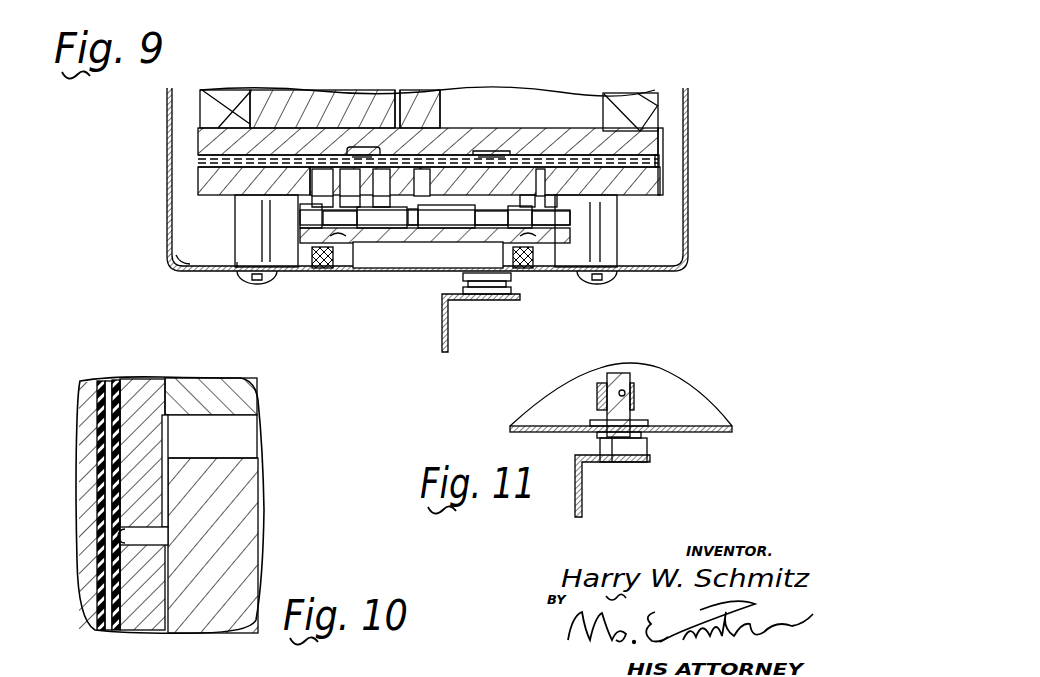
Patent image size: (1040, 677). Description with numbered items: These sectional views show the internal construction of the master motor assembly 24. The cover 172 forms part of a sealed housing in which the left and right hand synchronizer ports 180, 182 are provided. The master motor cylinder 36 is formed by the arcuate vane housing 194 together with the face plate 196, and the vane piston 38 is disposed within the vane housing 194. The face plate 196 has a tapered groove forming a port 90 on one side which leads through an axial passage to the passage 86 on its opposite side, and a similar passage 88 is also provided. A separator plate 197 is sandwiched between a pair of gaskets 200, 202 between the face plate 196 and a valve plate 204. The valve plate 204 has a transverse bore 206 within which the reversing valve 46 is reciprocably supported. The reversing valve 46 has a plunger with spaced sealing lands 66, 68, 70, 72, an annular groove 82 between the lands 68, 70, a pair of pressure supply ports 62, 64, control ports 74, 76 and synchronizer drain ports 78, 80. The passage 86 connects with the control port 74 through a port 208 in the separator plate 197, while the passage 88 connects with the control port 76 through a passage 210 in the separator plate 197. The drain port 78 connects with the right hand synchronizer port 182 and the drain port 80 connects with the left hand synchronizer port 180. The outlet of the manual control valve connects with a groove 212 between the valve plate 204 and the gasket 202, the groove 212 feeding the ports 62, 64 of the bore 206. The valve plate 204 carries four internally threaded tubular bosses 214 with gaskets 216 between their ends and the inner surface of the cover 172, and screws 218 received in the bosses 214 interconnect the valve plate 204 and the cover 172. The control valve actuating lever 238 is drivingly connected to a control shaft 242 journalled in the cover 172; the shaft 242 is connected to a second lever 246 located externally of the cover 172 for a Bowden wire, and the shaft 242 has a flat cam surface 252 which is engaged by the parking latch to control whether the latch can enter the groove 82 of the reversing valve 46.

In FIG. 9, the master motor assembly 24 is at (694, 170).
In FIG. 10, the master motor assembly 24 is at (111, 370).
In FIG. 11, the master motor assembly 24 is at (706, 386).
In FIG. 9, the master motor cylinder 36 is at (660, 98).
In FIG. 10, the master motor cylinder 36 is at (250, 433).
In FIG. 9, the vane piston 38 is at (375, 95).
In FIG. 10, the vane piston 38 is at (230, 545).
In FIG. 9, the reversing valve 46 is at (300, 210).
In FIG. 9, the pressure supply port 62 is at (472, 232).
In FIG. 9, the pressure supply port 64 is at (392, 232).
In FIG. 9, the sealing land 66 is at (308, 252).
In FIG. 9, the sealing land 68 is at (415, 232).
In FIG. 9, the sealing land 70 is at (440, 230).
In FIG. 9, the sealing land 72 is at (522, 216).
In FIG. 9, the control port 74 is at (518, 252).
In FIG. 9, the control port 76 is at (337, 234).
In FIG. 9, the synchronizer drain port 78 is at (533, 245).
In FIG. 9, the synchronizer drain port 80 is at (318, 252).
In FIG. 9, the annular groove 82 is at (420, 165).
In FIG. 9, the passage 86 is at (488, 152).
In FIG. 10, the passage 86 is at (125, 533).
In FIG. 9, the passage 88 is at (362, 150).
In FIG. 10, the port 90 is at (180, 500).
In FIG. 9, the cover 172 is at (170, 163).
In FIG. 11, the cover 172 is at (715, 433).
In FIG. 9, the left hand synchronizer port 180 is at (313, 266).
In FIG. 9, the right hand synchronizer port 182 is at (540, 258).
In FIG. 9, the arcuate vane housing 194 is at (655, 118).
In FIG. 10, the arcuate vane housing 194 is at (195, 398).
In FIG. 9, the face plate 196 is at (205, 138).
In FIG. 10, the face plate 196 is at (143, 400).
In FIG. 9, the separator plate 197 is at (200, 158).
In FIG. 10, the separator plate 197 is at (105, 632).
In FIG. 9, the gasket 200 is at (660, 146).
In FIG. 10, the gasket 200 is at (118, 606).
In FIG. 9, the gasket 202 is at (655, 165).
In FIG. 10, the gasket 202 is at (97, 415).
In FIG. 9, the valve plate 204 is at (205, 180).
In FIG. 10, the valve plate 204 is at (85, 562).
In FIG. 9, the transverse bore 206 is at (560, 226).
In FIG. 9, the port 208 is at (500, 156).
In FIG. 9, the passage 210 is at (355, 152).
In FIG. 9, the groove 212 is at (395, 92).
In FIG. 9, the tubular boss 214 is at (240, 246).
In FIG. 9, the gasket 216 is at (240, 272).
In FIG. 9, the screw 218 is at (270, 278).
In FIG. 11, the actuating lever 238 is at (598, 390).
In FIG. 11, the control shaft 242 is at (617, 376).
In FIG. 9, the second lever 246 is at (440, 330).
In FIG. 11, the second lever 246 is at (582, 486).
In FIG. 11, the flat cam surface 252 is at (627, 395).